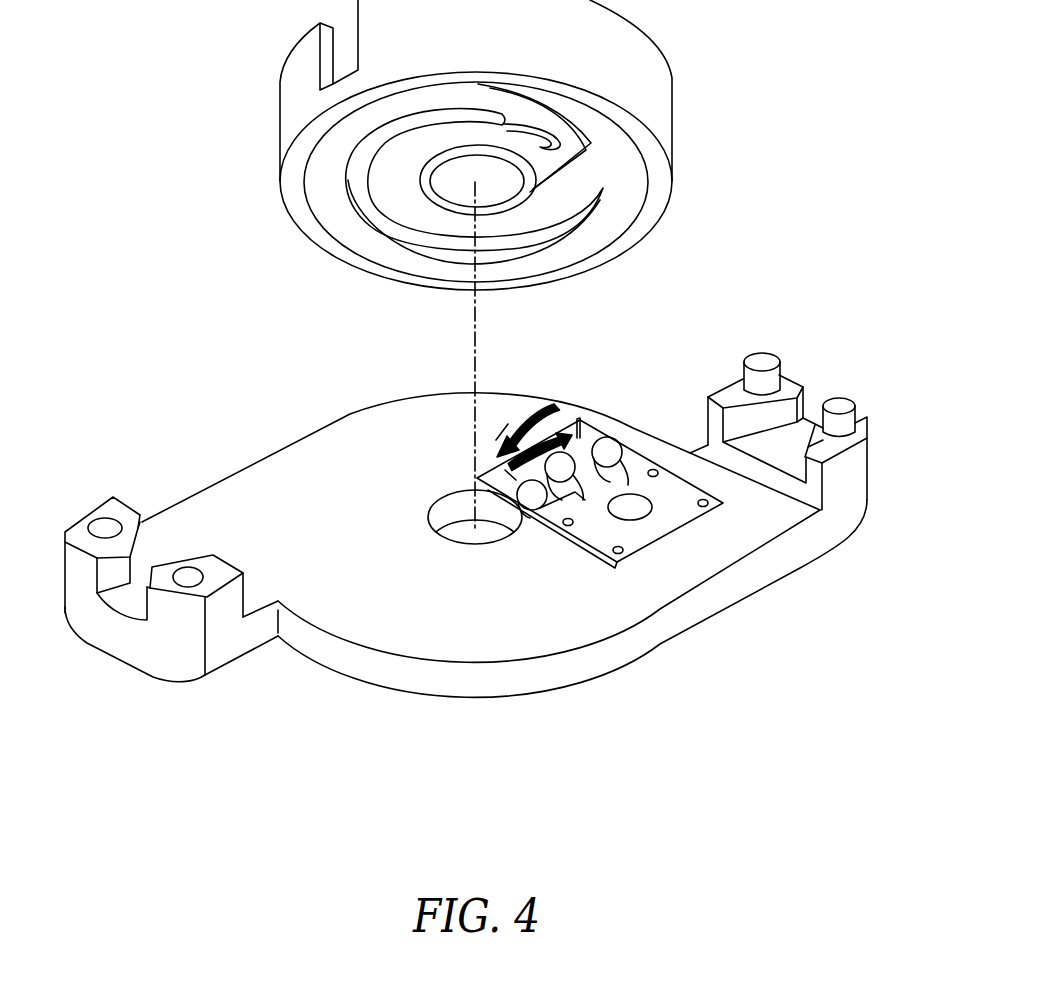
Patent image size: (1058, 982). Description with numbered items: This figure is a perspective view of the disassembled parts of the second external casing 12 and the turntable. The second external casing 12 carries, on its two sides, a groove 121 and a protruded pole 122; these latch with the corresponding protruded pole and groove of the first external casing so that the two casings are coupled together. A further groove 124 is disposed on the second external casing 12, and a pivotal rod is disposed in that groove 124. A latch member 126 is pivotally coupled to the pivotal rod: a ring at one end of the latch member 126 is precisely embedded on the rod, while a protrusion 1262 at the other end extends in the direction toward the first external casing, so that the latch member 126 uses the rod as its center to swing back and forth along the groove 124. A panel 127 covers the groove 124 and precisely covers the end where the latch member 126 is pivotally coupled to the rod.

The second external casing 12 is at (478, 530).
The groove 121 is at (183, 575).
The protruded pole 122 is at (840, 423).
The groove 124 is at (590, 432).
The latch member 126 is at (587, 490).
The protrusion 1262 is at (562, 470).
The panel 127 is at (660, 497).